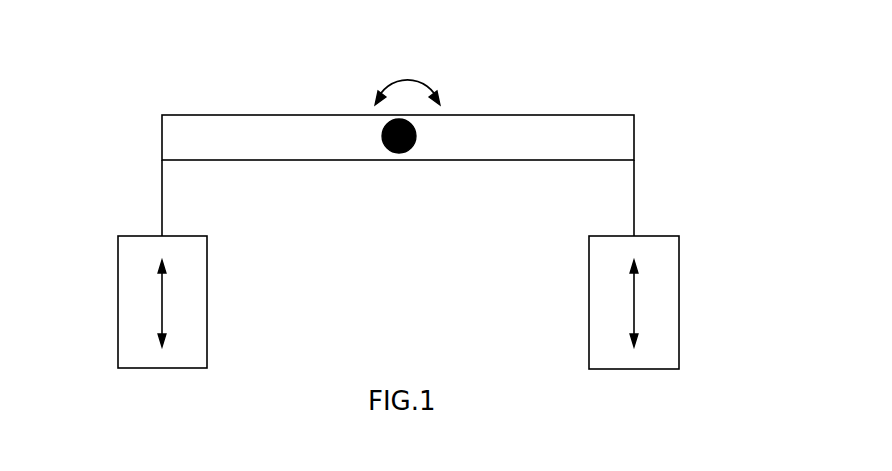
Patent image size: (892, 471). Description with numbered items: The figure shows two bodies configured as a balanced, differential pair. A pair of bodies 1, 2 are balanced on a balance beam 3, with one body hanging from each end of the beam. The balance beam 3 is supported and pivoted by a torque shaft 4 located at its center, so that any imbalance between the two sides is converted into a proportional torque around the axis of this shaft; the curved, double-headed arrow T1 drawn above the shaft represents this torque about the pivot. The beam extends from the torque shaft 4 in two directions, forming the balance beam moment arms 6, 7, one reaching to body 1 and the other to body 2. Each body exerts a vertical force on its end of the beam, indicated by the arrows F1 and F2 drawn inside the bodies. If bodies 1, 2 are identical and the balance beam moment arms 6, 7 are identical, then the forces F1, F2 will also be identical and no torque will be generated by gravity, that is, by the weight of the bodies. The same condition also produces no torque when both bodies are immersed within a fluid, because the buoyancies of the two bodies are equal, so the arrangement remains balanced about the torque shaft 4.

The body 1 is at (118, 310).
The body 2 is at (679, 302).
The balance beam 3 is at (531, 102).
The torque shaft 4 is at (387, 149).
The balance beam moment arm 6 is at (258, 160).
The balance beam moment arm 7 is at (539, 160).
The torque T1 is at (408, 69).
The force F1 is at (167, 300).
The force F2 is at (628, 301).